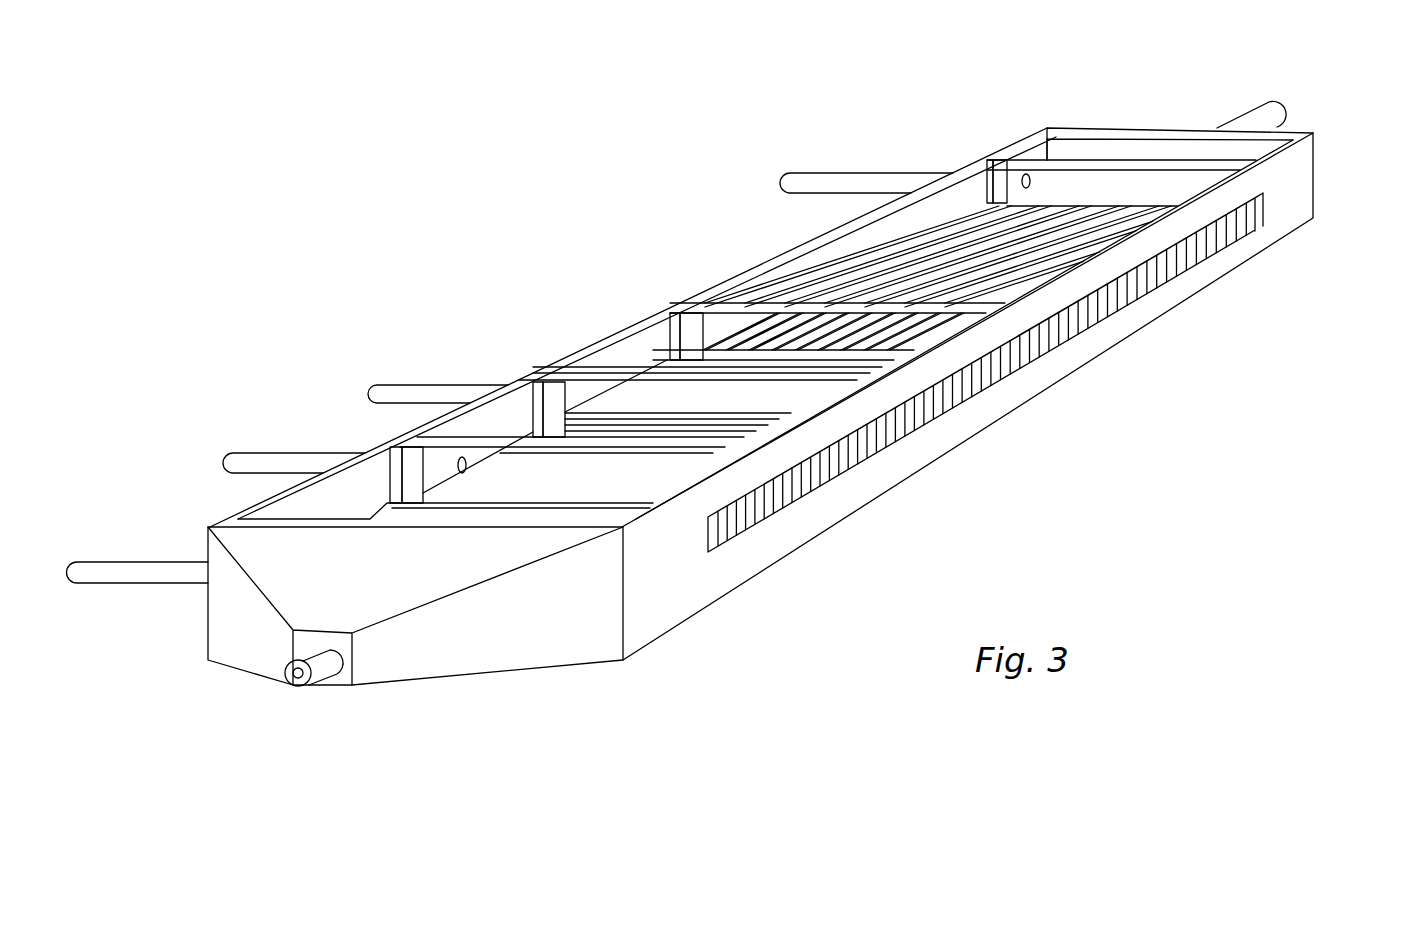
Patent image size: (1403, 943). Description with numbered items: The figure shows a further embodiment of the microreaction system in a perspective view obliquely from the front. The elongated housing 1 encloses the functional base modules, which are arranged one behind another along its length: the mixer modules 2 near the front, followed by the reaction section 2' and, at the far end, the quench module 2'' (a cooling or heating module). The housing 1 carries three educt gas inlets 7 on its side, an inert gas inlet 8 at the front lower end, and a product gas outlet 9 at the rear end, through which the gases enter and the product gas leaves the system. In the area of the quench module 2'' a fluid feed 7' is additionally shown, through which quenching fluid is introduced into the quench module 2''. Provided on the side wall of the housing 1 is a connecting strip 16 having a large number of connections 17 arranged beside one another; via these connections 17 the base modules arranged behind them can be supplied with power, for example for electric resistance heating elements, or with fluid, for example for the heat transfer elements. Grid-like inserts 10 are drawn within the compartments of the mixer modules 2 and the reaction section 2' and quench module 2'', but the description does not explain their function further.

The housing 1 is at (680, 603).
The mixer modules 2 is at (744, 336).
The reaction section 2' is at (944, 313).
The quench module 2'' is at (1221, 176).
The educt gas inlets 7 is at (288, 463).
The fluid feed 7' is at (866, 151).
The inert gas inlet 8 is at (316, 682).
The product gas outlet 9 is at (1266, 112).
The grid 10 is at (653, 392).
The connecting strip 16 is at (985, 396).
The connections 17 is at (732, 530).